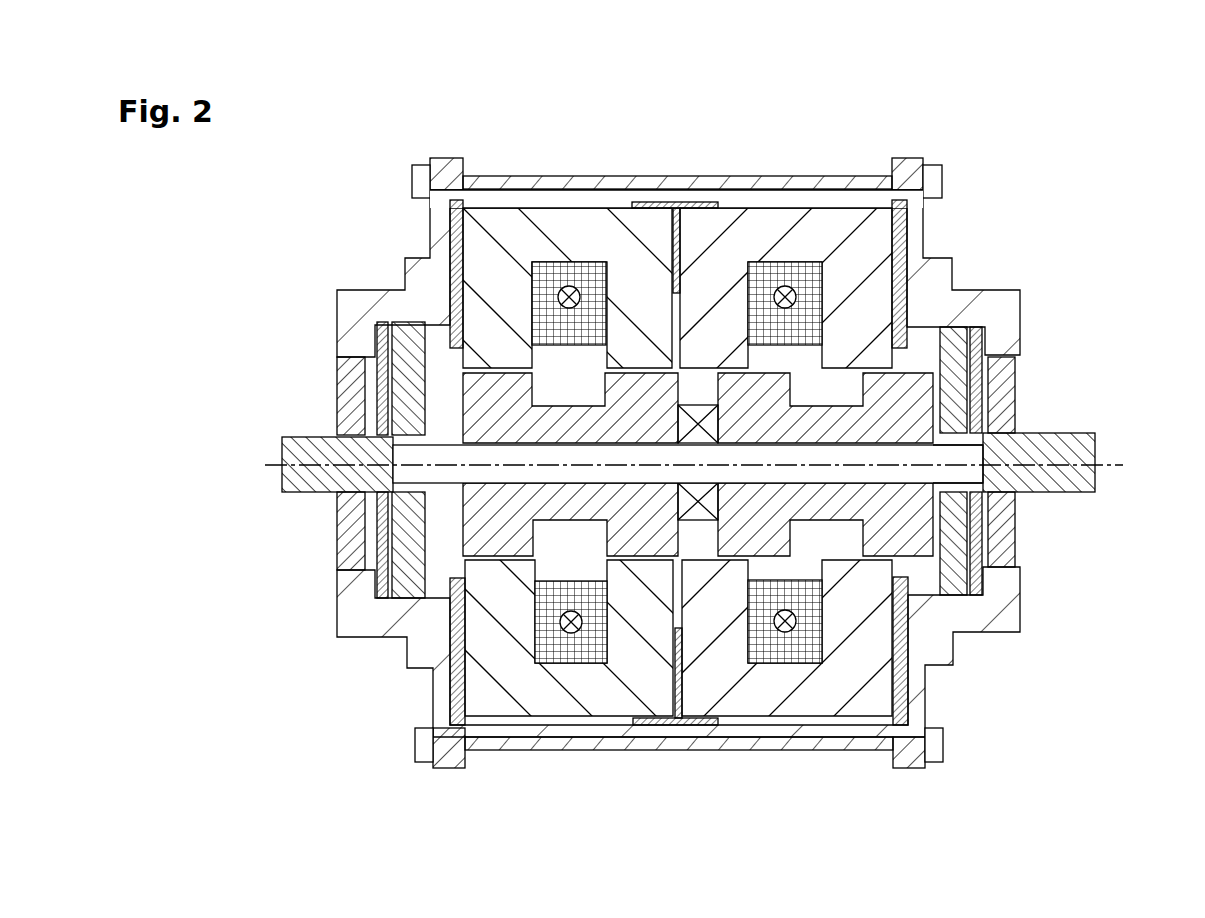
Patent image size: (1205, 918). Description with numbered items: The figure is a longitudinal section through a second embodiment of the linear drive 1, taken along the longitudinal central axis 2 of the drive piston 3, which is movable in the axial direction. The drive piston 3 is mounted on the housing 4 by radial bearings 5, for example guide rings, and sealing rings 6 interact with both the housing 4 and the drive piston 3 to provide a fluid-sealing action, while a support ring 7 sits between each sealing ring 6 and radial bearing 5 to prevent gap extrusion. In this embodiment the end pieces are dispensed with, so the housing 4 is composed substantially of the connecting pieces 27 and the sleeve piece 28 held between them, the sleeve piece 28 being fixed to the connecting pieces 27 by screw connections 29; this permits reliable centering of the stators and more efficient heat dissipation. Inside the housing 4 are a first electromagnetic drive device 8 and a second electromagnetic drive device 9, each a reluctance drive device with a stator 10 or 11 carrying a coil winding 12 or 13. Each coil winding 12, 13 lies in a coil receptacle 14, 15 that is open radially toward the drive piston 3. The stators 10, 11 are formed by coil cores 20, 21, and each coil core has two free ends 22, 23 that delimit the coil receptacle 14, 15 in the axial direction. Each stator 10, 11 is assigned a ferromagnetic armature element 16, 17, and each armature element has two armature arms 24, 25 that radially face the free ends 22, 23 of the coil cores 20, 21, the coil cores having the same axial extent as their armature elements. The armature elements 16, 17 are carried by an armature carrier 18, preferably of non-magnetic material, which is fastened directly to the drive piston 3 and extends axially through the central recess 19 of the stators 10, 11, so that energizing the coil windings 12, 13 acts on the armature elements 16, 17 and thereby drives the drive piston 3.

The linear drive 1 is at (1113, 166).
The longitudinal central axis 2 is at (1117, 462).
The drive piston 3 is at (1073, 478).
The housing 4 is at (378, 276).
The radial bearing 5 is at (410, 528).
The sealing ring 6 is at (337, 397).
The support ring 7 is at (377, 583).
The first electromagnetic drive device 8 is at (510, 175).
The second electromagnetic drive device 9 is at (815, 175).
The stator 10 is at (615, 248).
The stator 11 is at (858, 280).
The coil winding 12 is at (570, 272).
The coil winding 13 is at (790, 262).
The coil receptacle 14 is at (503, 548).
The coil receptacle 15 is at (797, 563).
The armature element 16 is at (572, 570).
The armature element 17 is at (853, 540).
The armature carrier 18 is at (968, 472).
The central recess 19 is at (700, 390).
The coil core 20 is at (497, 285).
The coil core 21 is at (905, 255).
The free end 22 is at (455, 603).
The free end 23 is at (657, 573).
The armature arm 24 is at (470, 575).
The armature arm 25 is at (573, 510).
The connecting piece 27 is at (360, 307).
The sleeve piece 28 is at (855, 230).
The screw connection 29 is at (420, 182).